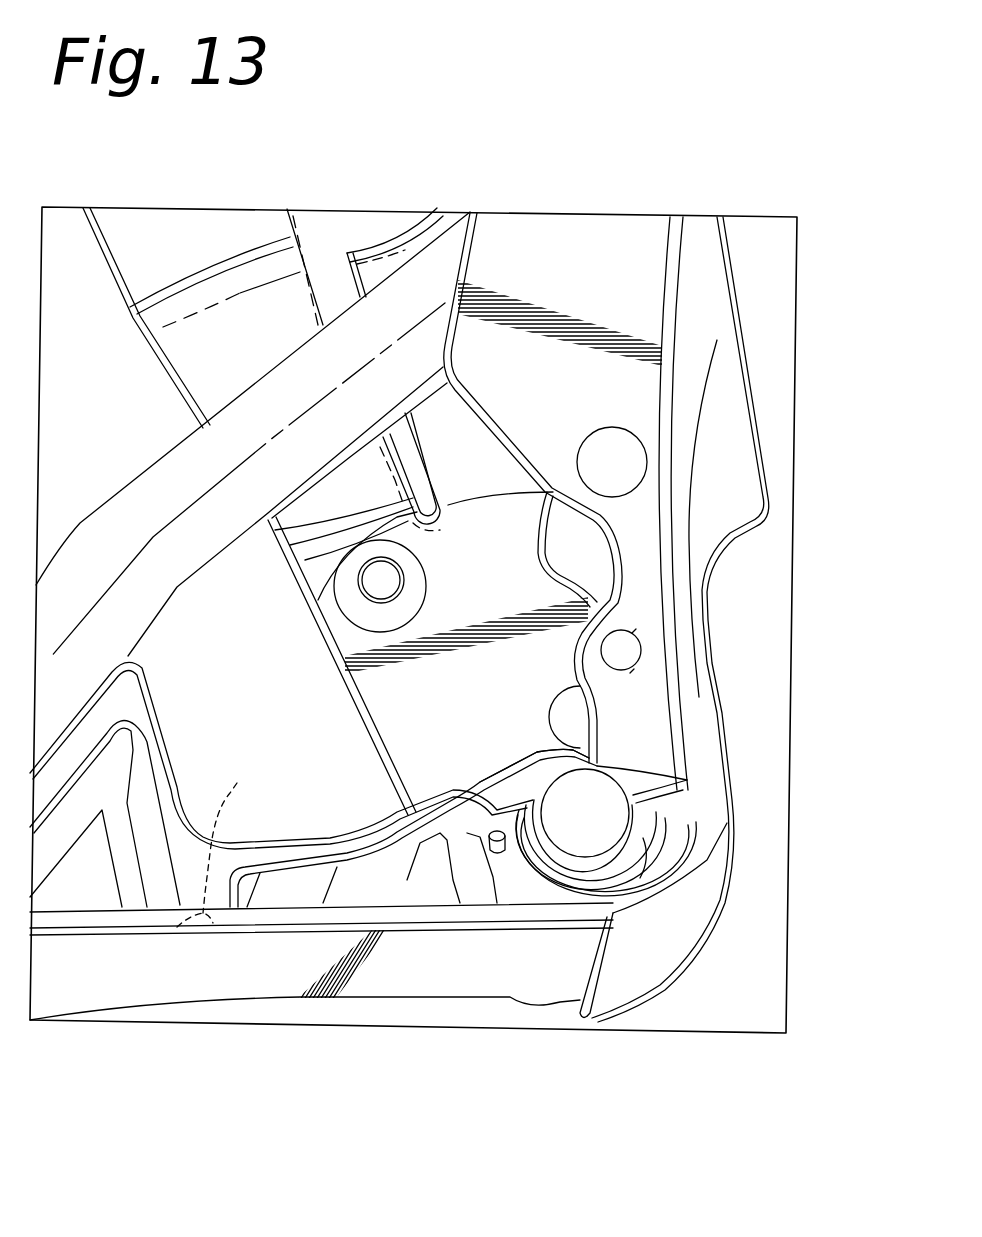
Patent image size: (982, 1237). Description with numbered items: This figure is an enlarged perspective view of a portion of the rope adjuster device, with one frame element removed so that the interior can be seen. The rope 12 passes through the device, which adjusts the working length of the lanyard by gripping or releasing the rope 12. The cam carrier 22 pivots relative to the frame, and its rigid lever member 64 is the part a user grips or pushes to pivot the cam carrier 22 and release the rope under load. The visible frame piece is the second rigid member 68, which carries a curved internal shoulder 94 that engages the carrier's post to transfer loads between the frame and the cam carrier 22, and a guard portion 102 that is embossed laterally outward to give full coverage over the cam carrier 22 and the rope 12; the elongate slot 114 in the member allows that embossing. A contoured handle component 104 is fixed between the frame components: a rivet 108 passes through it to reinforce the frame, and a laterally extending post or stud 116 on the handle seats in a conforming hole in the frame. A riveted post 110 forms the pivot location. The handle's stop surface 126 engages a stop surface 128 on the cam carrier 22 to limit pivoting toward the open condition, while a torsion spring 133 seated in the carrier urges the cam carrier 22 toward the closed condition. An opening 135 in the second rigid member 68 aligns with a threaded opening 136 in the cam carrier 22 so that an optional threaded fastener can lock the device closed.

The rope 12 is at (140, 470).
The cam carrier 22 is at (172, 722).
The rigid lever member 64 is at (297, 837).
The second rigid member 68 is at (113, 247).
The curved internal shoulder 94 is at (410, 242).
The guard portion 102 is at (177, 355).
The contoured handle component 104 is at (727, 357).
The rivet 108 is at (598, 468).
The riveted post 110 is at (593, 840).
The elongate slot 114 is at (410, 468).
The laterally outwardly extending post or stud 116 is at (601, 653).
The stop surface 126 is at (645, 772).
The stop surface 128 is at (643, 785).
The torsion spring 133 is at (487, 837).
The opening 135 is at (380, 580).
The threaded opening 136 is at (245, 782).